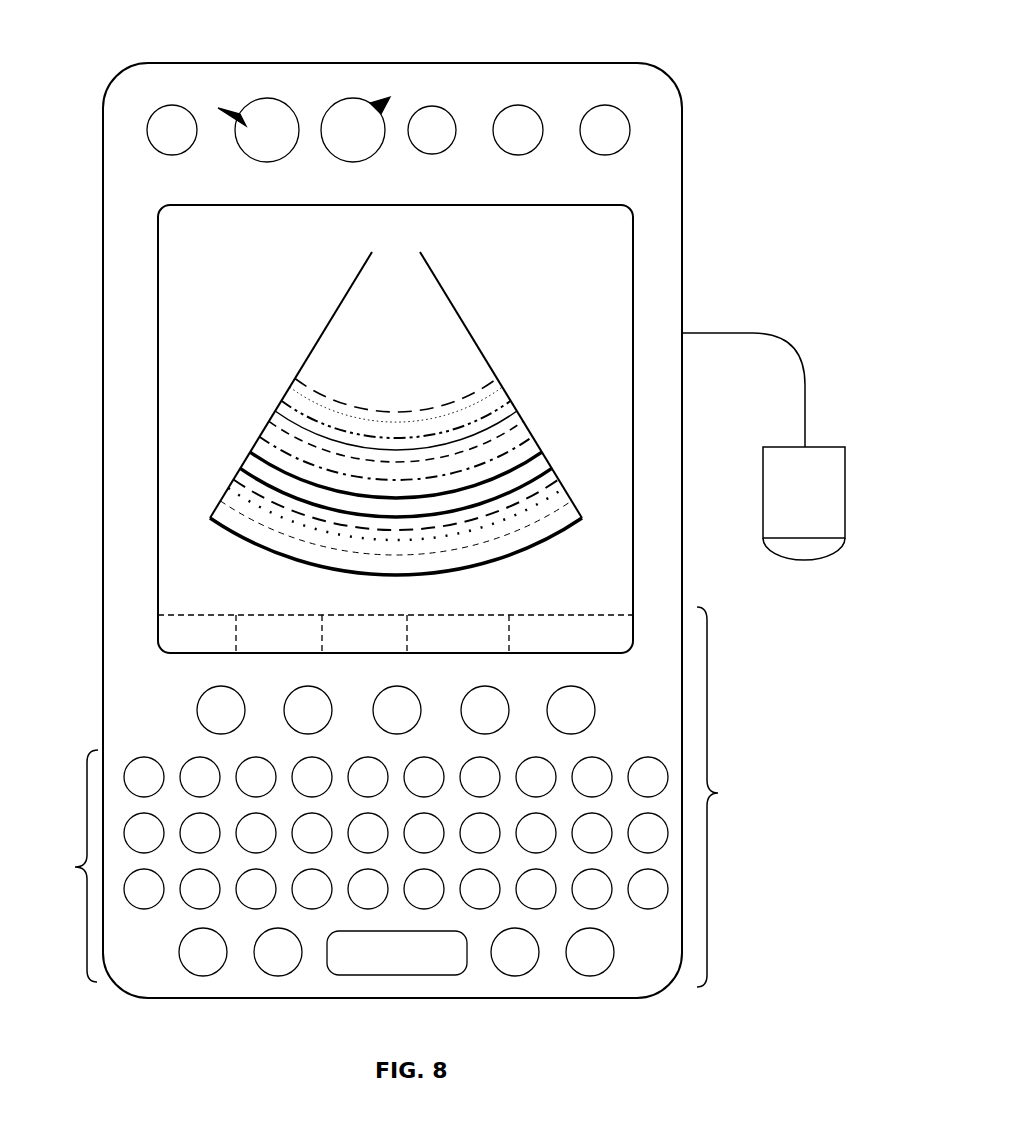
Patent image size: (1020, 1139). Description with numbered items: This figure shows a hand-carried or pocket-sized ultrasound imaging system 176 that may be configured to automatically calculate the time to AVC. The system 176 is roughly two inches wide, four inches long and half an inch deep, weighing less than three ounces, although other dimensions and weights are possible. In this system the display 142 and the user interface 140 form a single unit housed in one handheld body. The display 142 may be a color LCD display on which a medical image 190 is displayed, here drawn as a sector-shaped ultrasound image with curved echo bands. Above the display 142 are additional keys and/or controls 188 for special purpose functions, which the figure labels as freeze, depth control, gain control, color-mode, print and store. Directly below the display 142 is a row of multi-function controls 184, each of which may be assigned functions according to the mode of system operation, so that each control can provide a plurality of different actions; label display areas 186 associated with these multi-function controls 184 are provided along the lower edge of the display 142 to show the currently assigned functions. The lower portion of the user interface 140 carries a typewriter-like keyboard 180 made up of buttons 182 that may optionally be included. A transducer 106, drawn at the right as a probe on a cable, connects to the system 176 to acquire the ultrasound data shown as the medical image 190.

The pocket-sized ultrasound imaging system 176 is at (116, 68).
The additional keys and/or controls 188 is at (172, 105).
The display 142 is at (633, 252).
The medical image 190 is at (296, 388).
The label display areas 186 is at (186, 604).
The multi-function controls 184 is at (222, 686).
The buttons 182 is at (144, 758).
The typewriter-like keyboard 180 is at (66, 866).
The user interface 140 is at (731, 797).
The transducer 106 is at (778, 447).